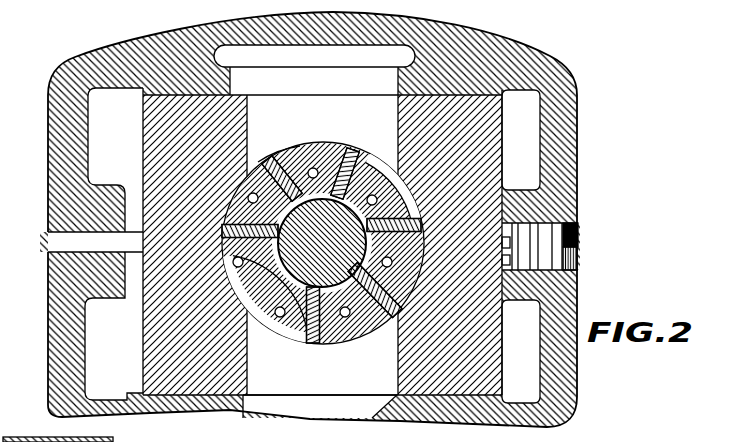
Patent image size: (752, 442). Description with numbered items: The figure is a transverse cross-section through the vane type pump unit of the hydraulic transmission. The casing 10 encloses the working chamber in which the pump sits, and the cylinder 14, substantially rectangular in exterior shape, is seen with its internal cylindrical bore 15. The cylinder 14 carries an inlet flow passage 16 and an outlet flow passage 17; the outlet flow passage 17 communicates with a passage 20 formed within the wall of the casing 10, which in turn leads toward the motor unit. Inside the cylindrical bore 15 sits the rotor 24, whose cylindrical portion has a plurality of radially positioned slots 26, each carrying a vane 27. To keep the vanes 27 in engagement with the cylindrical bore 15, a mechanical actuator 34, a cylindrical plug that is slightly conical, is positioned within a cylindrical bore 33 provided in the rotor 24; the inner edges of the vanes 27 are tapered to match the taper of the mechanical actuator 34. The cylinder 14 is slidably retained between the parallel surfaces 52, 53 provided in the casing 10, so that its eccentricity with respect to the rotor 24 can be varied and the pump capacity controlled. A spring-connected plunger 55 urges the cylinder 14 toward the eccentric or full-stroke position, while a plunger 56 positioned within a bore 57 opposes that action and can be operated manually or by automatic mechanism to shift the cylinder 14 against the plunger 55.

The casing 10 is at (558, 80).
The cylinder 14 is at (143, 145).
The cylindrical bore 15 is at (329, 151).
The inlet flow passage 16 is at (282, 388).
The outlet flow passage 17 is at (298, 99).
The passage 20 is at (312, 57).
The rotor 24 is at (303, 161).
The slot 26 is at (394, 184).
The vane 27 is at (360, 155).
The cylindrical bore 33 is at (280, 330).
The mechanical actuator 34 is at (290, 243).
The parallel surface 52 is at (136, 94).
The parallel surface 53 is at (134, 392).
The plunger 55 is at (57, 240).
The plunger 56 is at (570, 232).
The bore 57 is at (521, 246).